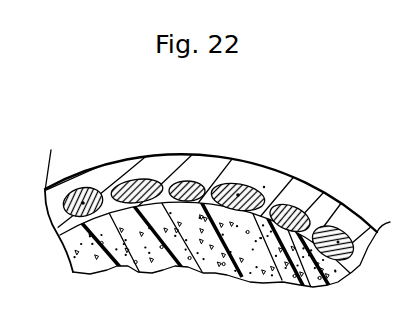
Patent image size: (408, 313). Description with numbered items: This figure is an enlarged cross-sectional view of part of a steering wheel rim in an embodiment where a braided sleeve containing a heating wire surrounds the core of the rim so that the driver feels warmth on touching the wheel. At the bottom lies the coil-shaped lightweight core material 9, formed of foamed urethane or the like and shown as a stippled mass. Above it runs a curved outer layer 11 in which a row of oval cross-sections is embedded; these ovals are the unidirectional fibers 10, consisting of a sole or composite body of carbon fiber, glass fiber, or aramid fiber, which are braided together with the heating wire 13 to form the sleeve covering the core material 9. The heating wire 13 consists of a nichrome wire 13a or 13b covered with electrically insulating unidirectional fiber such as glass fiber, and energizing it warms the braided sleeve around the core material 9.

The coil-shaped lightweight core material 9 is at (68, 254).
The unidirectional fibers 10 is at (253, 182).
The outer lining layer 11 is at (201, 153).
The heating wire 13 is at (264, 186).
The nichrome wire 13a is at (236, 193).
The nichrome wire 13b is at (83, 203).